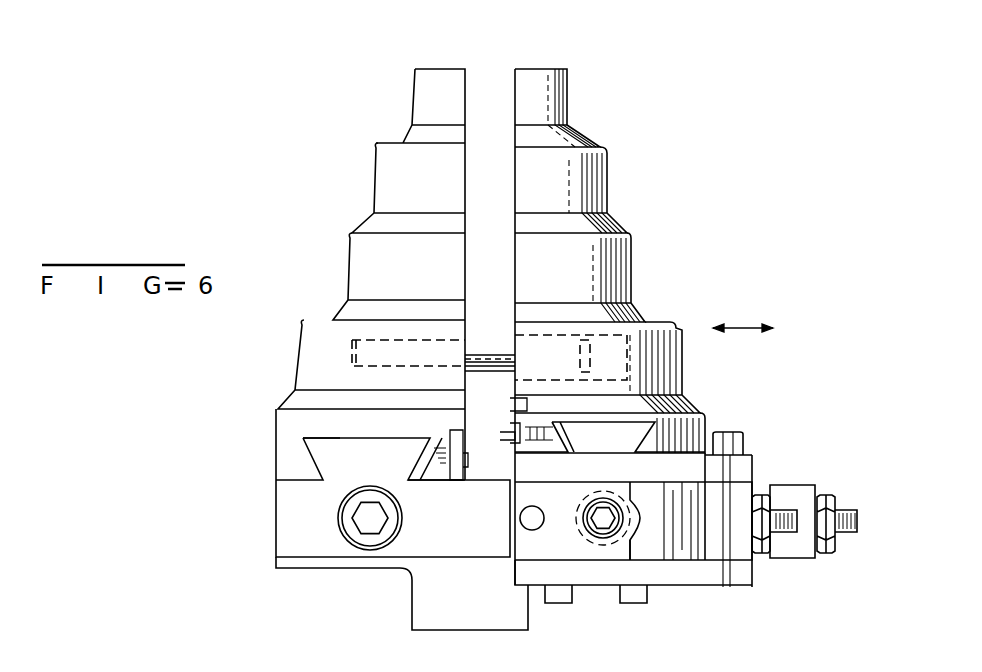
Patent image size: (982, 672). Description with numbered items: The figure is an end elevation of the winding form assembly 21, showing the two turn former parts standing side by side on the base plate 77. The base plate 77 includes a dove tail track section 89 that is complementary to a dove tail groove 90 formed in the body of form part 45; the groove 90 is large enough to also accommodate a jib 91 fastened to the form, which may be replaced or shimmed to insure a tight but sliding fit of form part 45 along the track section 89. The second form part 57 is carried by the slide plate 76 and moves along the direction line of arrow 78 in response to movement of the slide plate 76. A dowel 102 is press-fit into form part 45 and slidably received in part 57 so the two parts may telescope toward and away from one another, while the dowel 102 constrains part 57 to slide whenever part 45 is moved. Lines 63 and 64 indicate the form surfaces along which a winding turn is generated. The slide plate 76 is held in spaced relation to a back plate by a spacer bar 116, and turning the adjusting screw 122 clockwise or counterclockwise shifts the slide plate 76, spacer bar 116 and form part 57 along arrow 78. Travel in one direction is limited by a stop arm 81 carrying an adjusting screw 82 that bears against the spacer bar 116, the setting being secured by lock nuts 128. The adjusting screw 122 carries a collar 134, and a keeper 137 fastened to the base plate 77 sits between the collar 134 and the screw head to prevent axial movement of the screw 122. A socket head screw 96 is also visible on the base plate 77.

The assembly 21 is at (262, 421).
The form part 45 is at (439, 69).
The form part 57 is at (535, 69).
The line 63 is at (570, 302).
The line 64 is at (385, 300).
The slide plate 76 is at (612, 461).
The base plate 77 is at (463, 521).
The arrow 78 is at (743, 317).
The stop arm 81 is at (800, 487).
The adjusting screw 82 is at (845, 510).
The dove tail track section 89 is at (308, 459).
The dove tail groove 90 is at (351, 438).
The jib 91 is at (440, 438).
The socket head screw 96 is at (352, 531).
The dowel 102 is at (488, 345).
The spacer bar 116 is at (740, 547).
The adjusting screw 122 is at (600, 523).
The lock nuts 128 is at (758, 498).
The collar 134 is at (632, 526).
The keeper 137 is at (530, 497).